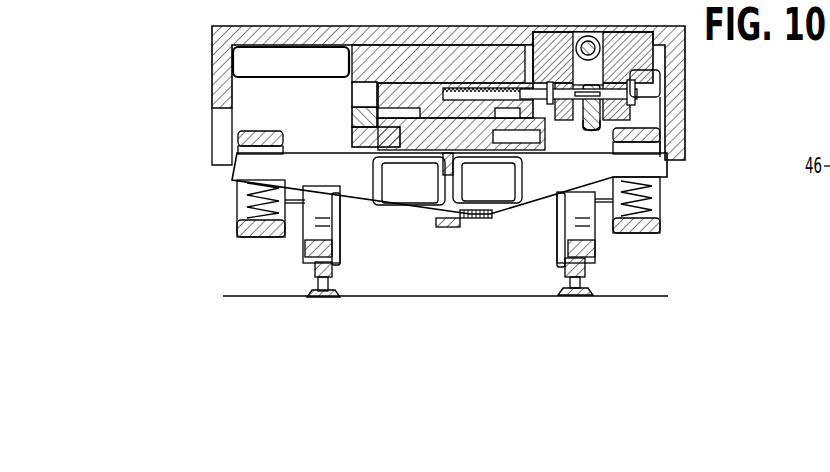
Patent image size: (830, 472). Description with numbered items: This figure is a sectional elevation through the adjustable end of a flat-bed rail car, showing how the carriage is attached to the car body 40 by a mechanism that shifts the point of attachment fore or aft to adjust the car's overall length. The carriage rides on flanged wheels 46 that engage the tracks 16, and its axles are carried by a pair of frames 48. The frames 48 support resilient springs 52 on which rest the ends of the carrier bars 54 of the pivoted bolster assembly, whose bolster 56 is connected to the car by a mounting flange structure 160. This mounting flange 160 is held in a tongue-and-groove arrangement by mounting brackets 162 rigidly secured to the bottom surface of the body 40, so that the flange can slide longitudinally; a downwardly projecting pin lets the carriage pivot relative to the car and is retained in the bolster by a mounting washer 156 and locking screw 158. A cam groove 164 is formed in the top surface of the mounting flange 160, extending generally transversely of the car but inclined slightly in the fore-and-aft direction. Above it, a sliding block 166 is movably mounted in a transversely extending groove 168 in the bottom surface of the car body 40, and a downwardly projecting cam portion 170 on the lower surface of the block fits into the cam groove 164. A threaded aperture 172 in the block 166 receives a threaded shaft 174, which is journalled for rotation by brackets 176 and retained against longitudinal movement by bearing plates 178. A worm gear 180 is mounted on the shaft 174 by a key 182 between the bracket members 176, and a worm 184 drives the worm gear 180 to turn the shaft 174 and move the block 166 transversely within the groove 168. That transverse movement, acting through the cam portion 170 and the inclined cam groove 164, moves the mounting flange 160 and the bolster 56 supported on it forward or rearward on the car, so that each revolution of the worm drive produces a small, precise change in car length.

The tracks 16 is at (585, 265).
The car body 40 is at (413, 26).
The flanged wheels 46 is at (312, 262).
The frames 48 is at (272, 238).
The resilient springs 52 is at (243, 222).
The carrier bars 54 is at (237, 175).
The bolster 56 is at (397, 202).
The mounting washer 156 is at (492, 216).
The locking screw 158 is at (447, 228).
The mounting flange structure 160 is at (353, 124).
The mounting brackets 162 is at (357, 138).
The cam groove 164 is at (356, 62).
The sliding block 166 is at (435, 97).
The groove 168 is at (357, 97).
The cam portion 170 is at (397, 101).
The threaded aperture 172 is at (444, 86).
The threaded shaft 174 is at (530, 51).
The brackets 176 is at (565, 31).
The bearing plates 178 is at (550, 105).
The worm gear 180 is at (601, 131).
The key 182 is at (632, 108).
The worm 184 is at (591, 37).